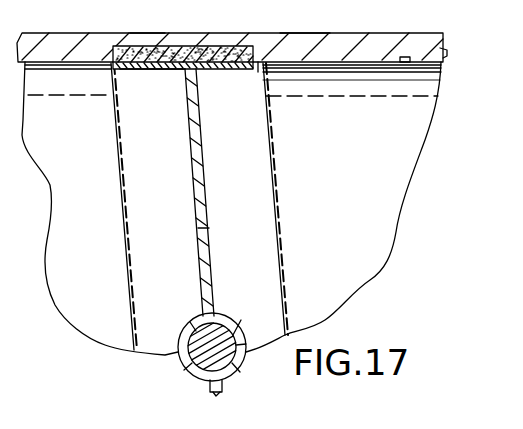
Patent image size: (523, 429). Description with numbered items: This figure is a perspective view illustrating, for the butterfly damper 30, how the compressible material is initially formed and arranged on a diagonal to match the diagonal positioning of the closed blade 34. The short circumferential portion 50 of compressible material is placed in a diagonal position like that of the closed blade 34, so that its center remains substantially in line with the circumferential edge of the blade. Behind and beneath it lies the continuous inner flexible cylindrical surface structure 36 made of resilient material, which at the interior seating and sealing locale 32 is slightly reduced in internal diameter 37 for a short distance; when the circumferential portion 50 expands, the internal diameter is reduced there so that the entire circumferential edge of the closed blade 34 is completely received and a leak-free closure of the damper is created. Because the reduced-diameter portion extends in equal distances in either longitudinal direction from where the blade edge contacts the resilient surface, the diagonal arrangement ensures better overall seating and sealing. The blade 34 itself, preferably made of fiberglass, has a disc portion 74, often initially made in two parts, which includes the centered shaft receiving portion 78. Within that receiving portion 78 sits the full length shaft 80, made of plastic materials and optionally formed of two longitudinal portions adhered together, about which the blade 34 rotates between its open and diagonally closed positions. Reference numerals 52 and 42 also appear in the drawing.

The butterfly damper 30 is at (76, 32).
The panel surface 52 is at (133, 33).
The short circumferential portion of compressible material 50 is at (197, 46).
The inner flexible cylindrical surface structure 36 is at (294, 55).
The facing layer 42 is at (325, 63).
The reduced internal diameter 37 is at (152, 70).
The interior seating and sealing locale 32 is at (158, 166).
The blade 34 is at (190, 189).
The disc portion 74 is at (197, 228).
The full length shaft 80 is at (197, 335).
The centered shaft receiving portion 78 is at (178, 347).